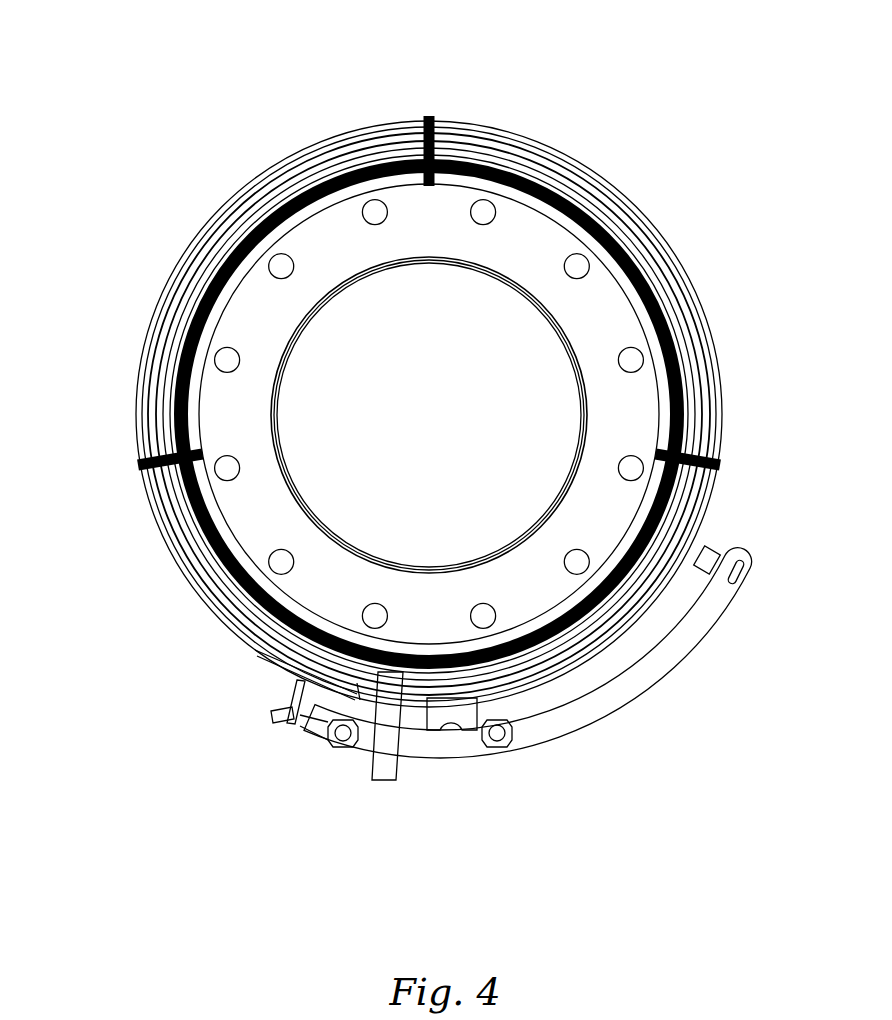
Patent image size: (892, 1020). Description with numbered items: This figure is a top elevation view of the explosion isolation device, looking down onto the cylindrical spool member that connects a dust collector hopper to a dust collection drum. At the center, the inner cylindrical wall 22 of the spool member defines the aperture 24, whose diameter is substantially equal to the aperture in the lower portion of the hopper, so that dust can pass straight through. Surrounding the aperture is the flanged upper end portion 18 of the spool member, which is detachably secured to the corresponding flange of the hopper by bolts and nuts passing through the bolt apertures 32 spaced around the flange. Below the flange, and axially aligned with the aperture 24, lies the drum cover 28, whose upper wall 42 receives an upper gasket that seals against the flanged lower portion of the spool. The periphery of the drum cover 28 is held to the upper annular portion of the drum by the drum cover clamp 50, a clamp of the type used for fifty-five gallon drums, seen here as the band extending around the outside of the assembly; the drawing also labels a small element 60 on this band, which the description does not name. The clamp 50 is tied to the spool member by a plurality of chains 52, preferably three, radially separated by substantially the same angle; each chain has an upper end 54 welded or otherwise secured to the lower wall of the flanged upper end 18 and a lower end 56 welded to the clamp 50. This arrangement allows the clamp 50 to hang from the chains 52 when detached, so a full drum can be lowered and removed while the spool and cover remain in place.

The flanged upper end portion 18 is at (237, 595).
The inner cylindrical wall 22 is at (488, 280).
The aperture 24 is at (540, 365).
The drum cover 28 is at (213, 263).
The bolt apertures 32 is at (230, 348).
The upper wall 42 is at (203, 338).
The drum cover clamp 50 is at (140, 430).
The chains 52 is at (700, 430).
The upper end 54 is at (223, 455).
The lower end 56 is at (430, 118).
The slotted tab 60 is at (715, 550).